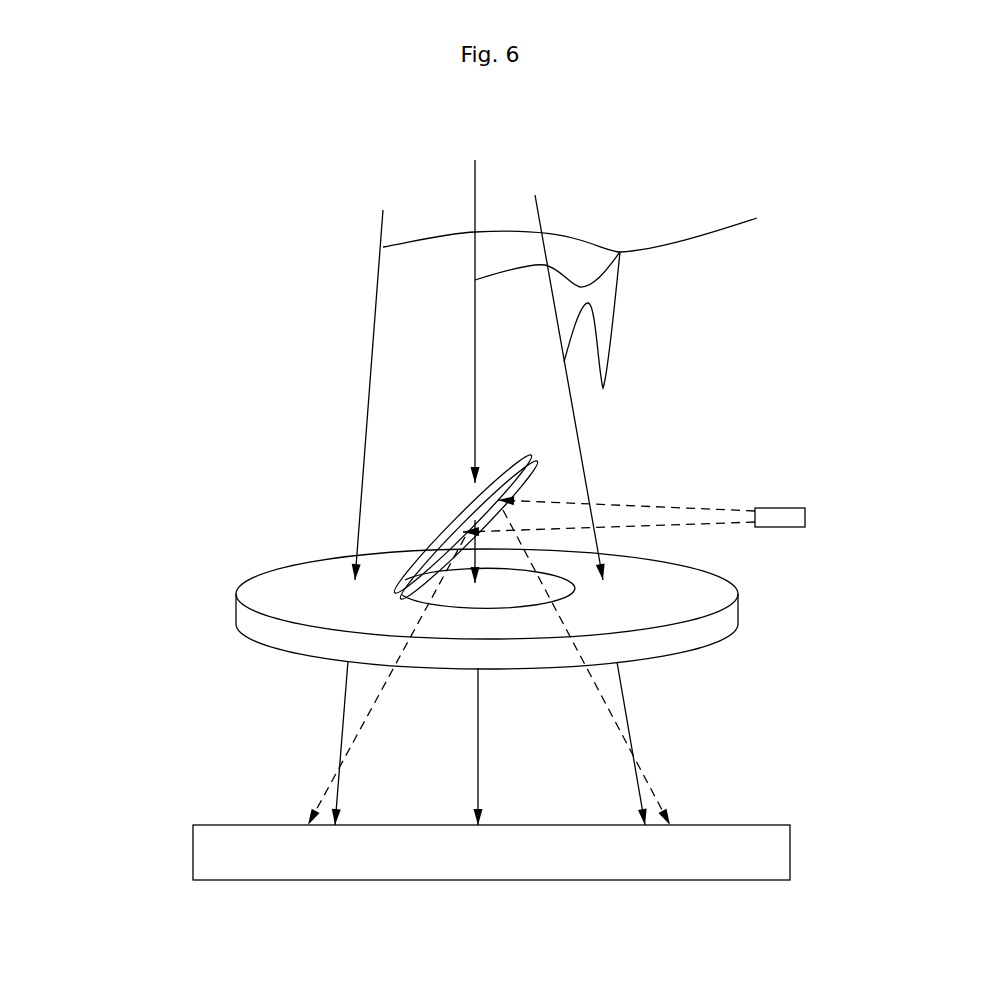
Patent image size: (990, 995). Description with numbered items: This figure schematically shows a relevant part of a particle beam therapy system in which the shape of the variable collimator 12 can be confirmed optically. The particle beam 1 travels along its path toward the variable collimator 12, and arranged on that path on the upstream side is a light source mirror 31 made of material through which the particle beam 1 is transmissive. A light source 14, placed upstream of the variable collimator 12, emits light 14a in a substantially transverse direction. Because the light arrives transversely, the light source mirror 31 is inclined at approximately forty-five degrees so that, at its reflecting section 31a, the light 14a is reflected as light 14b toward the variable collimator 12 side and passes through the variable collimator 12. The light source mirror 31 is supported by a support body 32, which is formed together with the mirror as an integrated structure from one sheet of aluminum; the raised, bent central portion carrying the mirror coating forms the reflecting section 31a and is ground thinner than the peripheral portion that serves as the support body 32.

The particle beam 1 is at (566, 492).
The variable collimator 12 is at (723, 825).
The light source 14 is at (805, 515).
The light 14a is at (658, 505).
The light 14b is at (323, 788).
The light source mirror 31 is at (556, 524).
The reflecting section 31a is at (485, 507).
The support body 32 is at (303, 575).